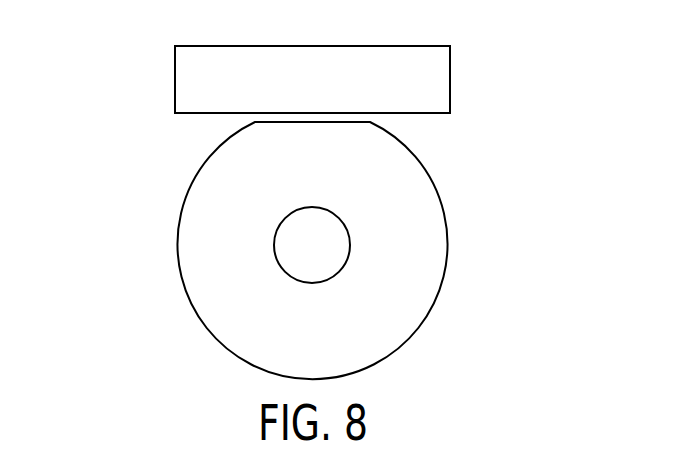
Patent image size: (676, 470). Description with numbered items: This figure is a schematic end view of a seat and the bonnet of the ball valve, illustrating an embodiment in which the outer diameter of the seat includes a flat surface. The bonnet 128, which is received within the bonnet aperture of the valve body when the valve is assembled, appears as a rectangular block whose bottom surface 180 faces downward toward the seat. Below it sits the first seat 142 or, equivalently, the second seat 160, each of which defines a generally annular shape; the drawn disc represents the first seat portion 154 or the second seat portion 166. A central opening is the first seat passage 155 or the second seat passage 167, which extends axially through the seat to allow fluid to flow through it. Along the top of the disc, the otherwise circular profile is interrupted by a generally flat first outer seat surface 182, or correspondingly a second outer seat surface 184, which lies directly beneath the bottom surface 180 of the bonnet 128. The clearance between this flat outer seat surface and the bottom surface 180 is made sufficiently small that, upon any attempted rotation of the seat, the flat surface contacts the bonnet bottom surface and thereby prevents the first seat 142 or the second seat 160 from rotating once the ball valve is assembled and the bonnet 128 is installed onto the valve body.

The bonnet 128 is at (356, 82).
The bottom surface of the bonnet 180 is at (418, 113).
The first outer seat surface 182 is at (208, 101).
The second outer seat surface 184 is at (287, 121).
The first seat 142 is at (365, 250).
The second seat 160 is at (365, 250).
The first seat portion 154 is at (365, 250).
The second seat portion 166 is at (400, 310).
The first seat passage 155 is at (315, 219).
The second seat passage 167 is at (316, 188).